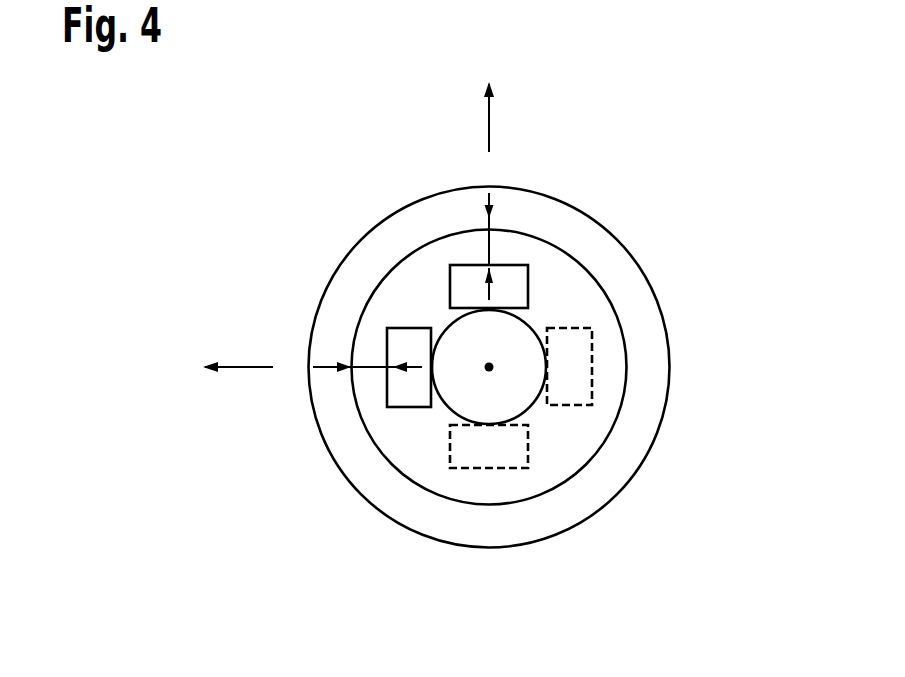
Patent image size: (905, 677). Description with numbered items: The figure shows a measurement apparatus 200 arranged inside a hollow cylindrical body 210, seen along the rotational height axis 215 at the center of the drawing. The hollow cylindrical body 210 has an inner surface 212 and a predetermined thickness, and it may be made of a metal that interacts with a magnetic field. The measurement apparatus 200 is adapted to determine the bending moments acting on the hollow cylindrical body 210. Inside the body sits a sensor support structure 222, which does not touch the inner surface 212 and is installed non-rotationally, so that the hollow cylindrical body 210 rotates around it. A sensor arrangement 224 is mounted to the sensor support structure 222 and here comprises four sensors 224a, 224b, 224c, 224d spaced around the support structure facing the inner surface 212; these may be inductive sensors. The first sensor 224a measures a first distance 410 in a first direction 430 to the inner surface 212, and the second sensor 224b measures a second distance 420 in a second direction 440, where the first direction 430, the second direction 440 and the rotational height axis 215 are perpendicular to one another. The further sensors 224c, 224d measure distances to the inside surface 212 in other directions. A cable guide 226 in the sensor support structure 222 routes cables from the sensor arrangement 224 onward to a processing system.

The measurement apparatus 200 is at (560, 418).
The hollow cylindrical body 210 is at (638, 303).
The inner surface 212 is at (427, 489).
The rotational height axis 215 is at (489, 367).
The sensor support structure 222 is at (522, 347).
The sensor arrangement 224 is at (417, 302).
The first sensor 224a is at (512, 265).
The second sensor 224b is at (407, 407).
The third sensor 224c is at (490, 468).
The fourth sensor 224d is at (593, 365).
The cable guide 226 is at (515, 393).
The first distance 410 is at (489, 247).
The second distance 420 is at (366, 368).
The first direction 430 is at (489, 113).
The second direction 440 is at (245, 367).